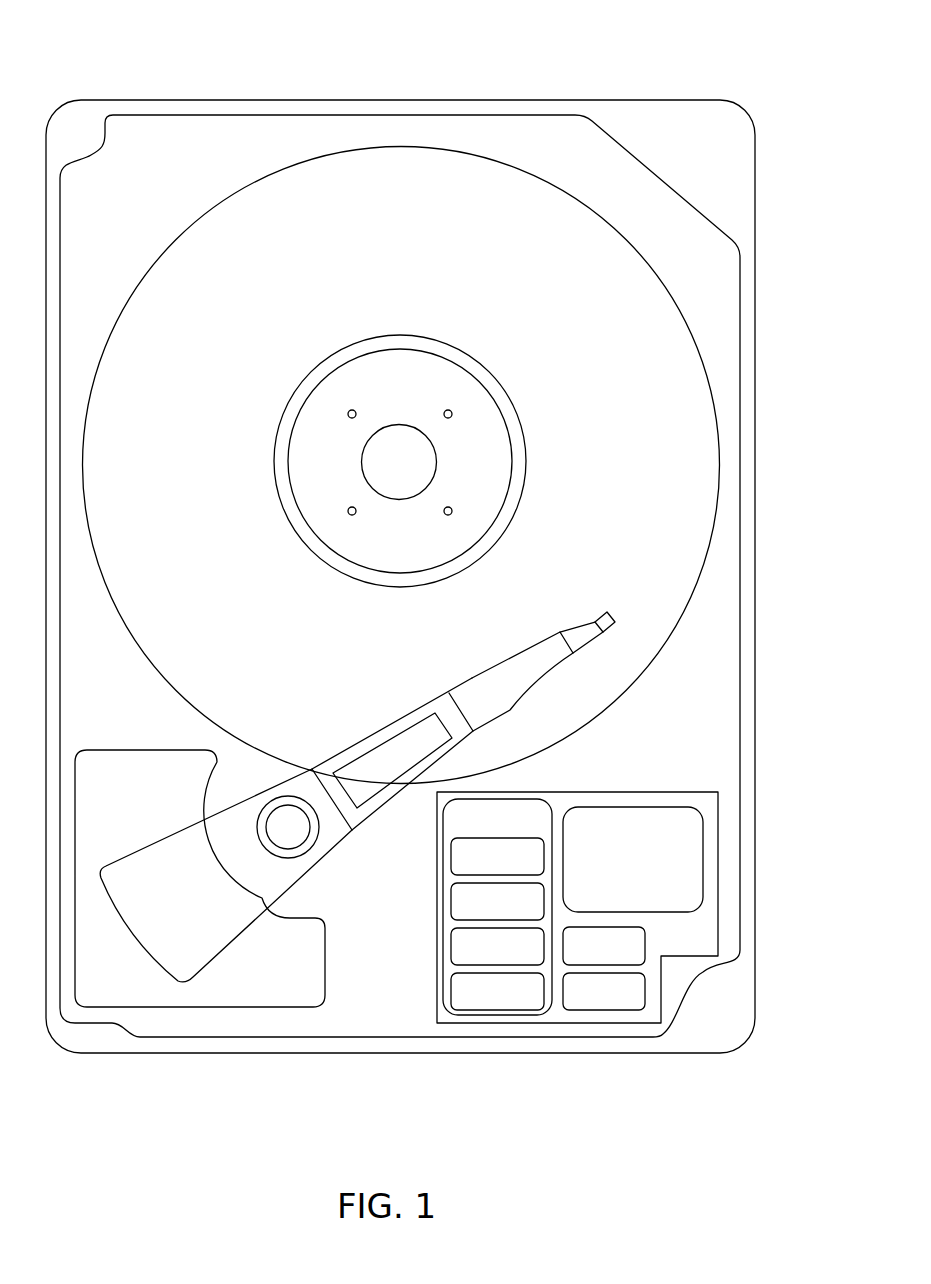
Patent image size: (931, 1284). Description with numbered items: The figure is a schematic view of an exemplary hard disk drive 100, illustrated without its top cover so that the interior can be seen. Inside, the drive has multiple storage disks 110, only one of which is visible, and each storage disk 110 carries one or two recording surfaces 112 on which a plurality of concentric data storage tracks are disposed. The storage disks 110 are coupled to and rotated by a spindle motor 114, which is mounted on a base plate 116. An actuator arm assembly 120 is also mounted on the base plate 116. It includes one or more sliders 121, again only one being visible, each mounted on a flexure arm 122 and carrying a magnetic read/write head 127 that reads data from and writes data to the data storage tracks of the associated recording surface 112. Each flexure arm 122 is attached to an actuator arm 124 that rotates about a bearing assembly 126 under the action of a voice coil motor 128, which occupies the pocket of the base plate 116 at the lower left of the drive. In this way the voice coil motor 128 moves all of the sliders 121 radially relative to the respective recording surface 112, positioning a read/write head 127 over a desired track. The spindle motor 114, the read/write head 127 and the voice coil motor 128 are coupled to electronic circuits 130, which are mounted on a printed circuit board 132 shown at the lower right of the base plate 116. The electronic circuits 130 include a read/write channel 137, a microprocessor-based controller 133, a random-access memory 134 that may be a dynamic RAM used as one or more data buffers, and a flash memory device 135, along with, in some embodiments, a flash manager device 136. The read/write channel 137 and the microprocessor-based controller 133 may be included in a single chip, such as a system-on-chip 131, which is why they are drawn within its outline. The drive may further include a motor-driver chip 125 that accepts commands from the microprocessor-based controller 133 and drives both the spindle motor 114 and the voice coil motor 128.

The hard disk drive 100 is at (437, 530).
The storage disk 110 is at (401, 462).
The recording surface 112 is at (208, 445).
The spindle motor 114 is at (495, 402).
The base plate 116 is at (740, 602).
The actuator arm assembly 120 is at (396, 712).
The slider 121 is at (613, 613).
The flexure arm 122 is at (575, 625).
The actuator arm 124 is at (473, 677).
The motor-driver chip 125 is at (584, 962).
The bearing assembly 126 is at (315, 872).
The magnetic read/write head 127 is at (643, 537).
The voice coil motor 128 is at (327, 950).
The electronic circuits 130 is at (583, 868).
The system-on-chip 131 is at (497, 907).
The printed circuit board 132 is at (652, 790).
The microprocessor-based controller 133 is at (478, 872).
The random-access memory 134 is at (584, 1005).
The flash memory device 135 is at (613, 875).
The flash manager device 136 is at (478, 917).
The read/write channel 137 is at (478, 962).